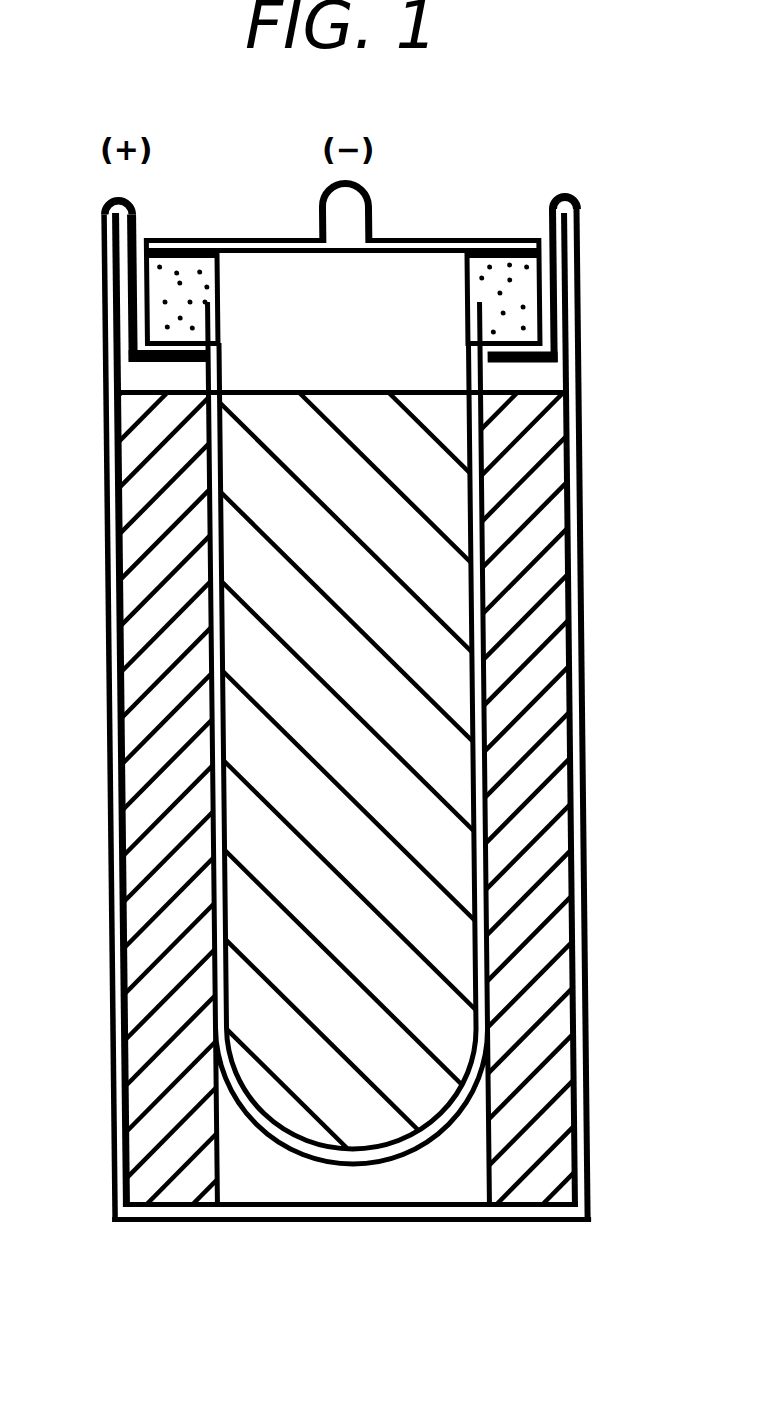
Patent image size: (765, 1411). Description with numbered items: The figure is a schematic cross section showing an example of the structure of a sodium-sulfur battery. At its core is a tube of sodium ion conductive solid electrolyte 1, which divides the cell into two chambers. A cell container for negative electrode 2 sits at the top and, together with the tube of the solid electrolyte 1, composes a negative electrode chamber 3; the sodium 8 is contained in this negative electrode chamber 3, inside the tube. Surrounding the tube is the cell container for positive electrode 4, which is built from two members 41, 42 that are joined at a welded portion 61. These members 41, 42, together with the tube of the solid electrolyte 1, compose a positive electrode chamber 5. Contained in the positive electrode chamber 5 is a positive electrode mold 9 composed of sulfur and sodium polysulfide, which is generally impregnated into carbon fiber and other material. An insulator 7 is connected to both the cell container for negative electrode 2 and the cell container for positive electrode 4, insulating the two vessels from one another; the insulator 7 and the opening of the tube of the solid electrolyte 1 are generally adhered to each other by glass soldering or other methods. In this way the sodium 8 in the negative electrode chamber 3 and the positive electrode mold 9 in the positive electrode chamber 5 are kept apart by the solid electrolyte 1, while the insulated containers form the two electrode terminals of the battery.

The tube of sodium ion conductive solid electrolyte 1 is at (486, 594).
The cell container for negative electrode 2 is at (409, 238).
The negative electrode chamber 3 is at (290, 272).
The cell container for positive electrode 4 is at (582, 486).
The member of the cell container for positive electrode 41 is at (586, 742).
The member of the cell container for positive electrode 42 is at (545, 364).
The positive electrode chamber 5 is at (131, 370).
The welded portion 61 is at (575, 197).
The insulator 7 is at (521, 300).
The sodium 8 is at (236, 685).
The positive electrode mold 9 is at (549, 878).